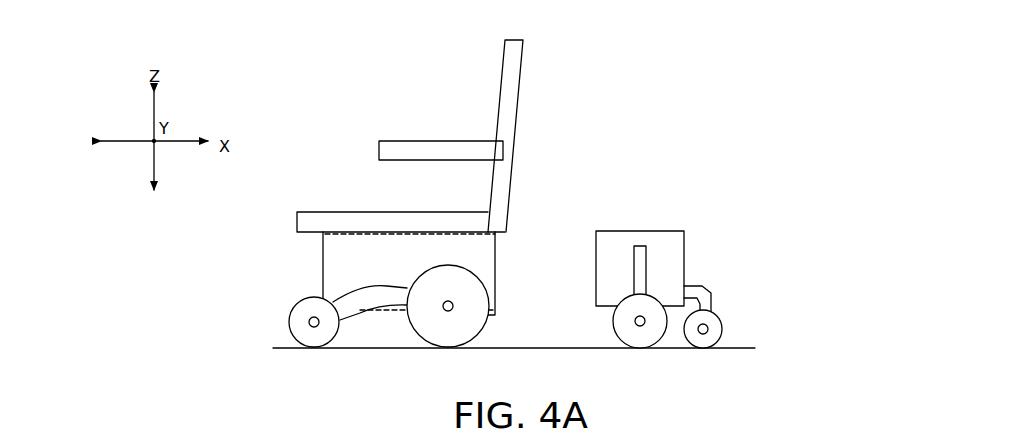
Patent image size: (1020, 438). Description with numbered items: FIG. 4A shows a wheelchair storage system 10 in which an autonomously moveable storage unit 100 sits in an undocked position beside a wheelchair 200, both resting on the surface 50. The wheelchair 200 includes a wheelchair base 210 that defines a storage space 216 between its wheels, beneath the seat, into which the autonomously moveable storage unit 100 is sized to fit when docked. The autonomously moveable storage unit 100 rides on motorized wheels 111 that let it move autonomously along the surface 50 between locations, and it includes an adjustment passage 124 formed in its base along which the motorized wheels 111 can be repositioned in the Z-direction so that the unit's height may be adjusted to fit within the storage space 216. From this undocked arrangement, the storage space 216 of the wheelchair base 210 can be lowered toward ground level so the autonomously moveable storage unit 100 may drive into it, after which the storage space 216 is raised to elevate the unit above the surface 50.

The wheelchair storage system 10 is at (692, 88).
The wheelchair 200 is at (323, 112).
The storage space 216 is at (488, 228).
The wheelchair base 210 is at (516, 333).
The autonomously moveable storage unit 100 is at (700, 203).
The adjustment passage 124 is at (640, 246).
The motorized wheels 111 is at (656, 348).
The surface 50 is at (741, 348).